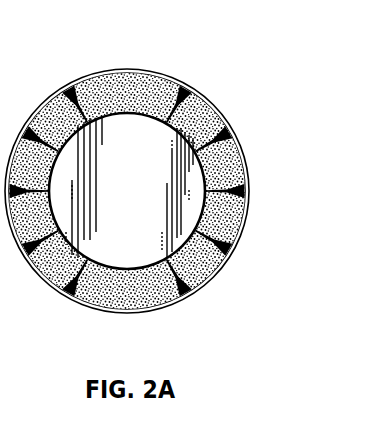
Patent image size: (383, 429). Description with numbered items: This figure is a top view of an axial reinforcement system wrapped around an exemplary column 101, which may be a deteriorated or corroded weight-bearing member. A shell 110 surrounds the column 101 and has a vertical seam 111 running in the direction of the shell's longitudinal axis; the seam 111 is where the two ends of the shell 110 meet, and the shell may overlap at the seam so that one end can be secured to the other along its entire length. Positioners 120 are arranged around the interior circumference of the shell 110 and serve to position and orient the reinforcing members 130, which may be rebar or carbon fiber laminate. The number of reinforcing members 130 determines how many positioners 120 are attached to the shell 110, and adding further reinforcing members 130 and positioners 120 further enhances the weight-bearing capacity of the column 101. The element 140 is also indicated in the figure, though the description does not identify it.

The column 101 is at (195, 173).
The shell 110 is at (93, 70).
The seam 111 is at (135, 70).
The positioners 120 is at (187, 90).
The reinforcing members 130 is at (79, 273).
The tubular wall 140 is at (217, 271).